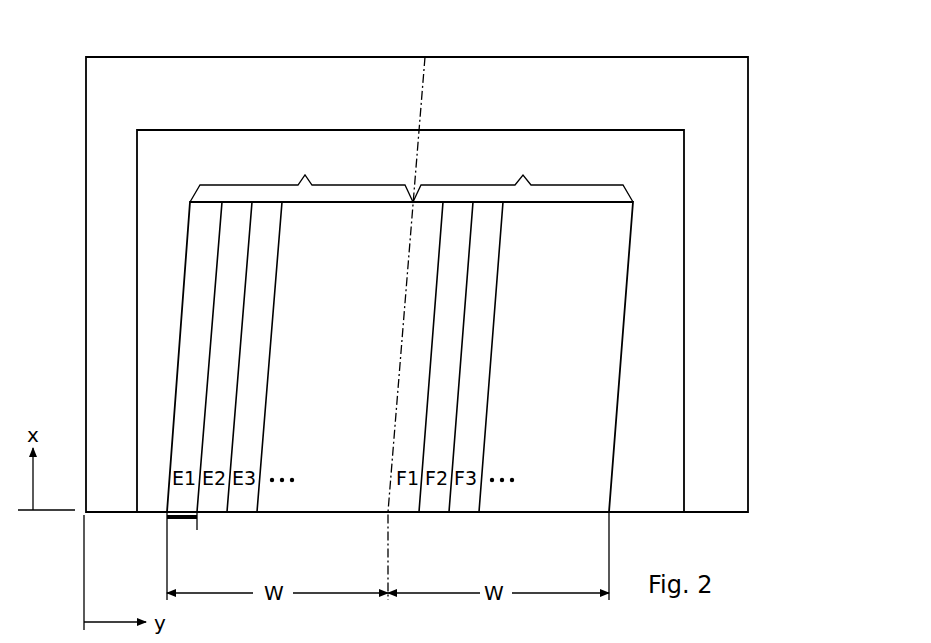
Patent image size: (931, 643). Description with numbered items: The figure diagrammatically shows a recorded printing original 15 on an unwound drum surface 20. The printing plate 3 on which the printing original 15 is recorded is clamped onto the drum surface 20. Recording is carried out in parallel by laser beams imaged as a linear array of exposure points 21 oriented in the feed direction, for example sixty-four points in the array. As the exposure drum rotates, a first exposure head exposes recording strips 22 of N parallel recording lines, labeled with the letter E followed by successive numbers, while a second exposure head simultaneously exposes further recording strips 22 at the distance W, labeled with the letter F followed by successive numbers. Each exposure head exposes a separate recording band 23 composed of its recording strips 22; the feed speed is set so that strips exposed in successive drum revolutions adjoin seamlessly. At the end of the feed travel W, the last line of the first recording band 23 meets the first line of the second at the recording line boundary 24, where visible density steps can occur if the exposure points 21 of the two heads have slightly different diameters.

The drum surface 20 is at (713, 92).
The printing plate 3 is at (677, 163).
The printing original 15 is at (596, 443).
The recording strips 22 is at (420, 338).
The recording band 23 is at (411, 176).
The recording line boundary 24 is at (425, 85).
The exposure points 21 is at (182, 527).